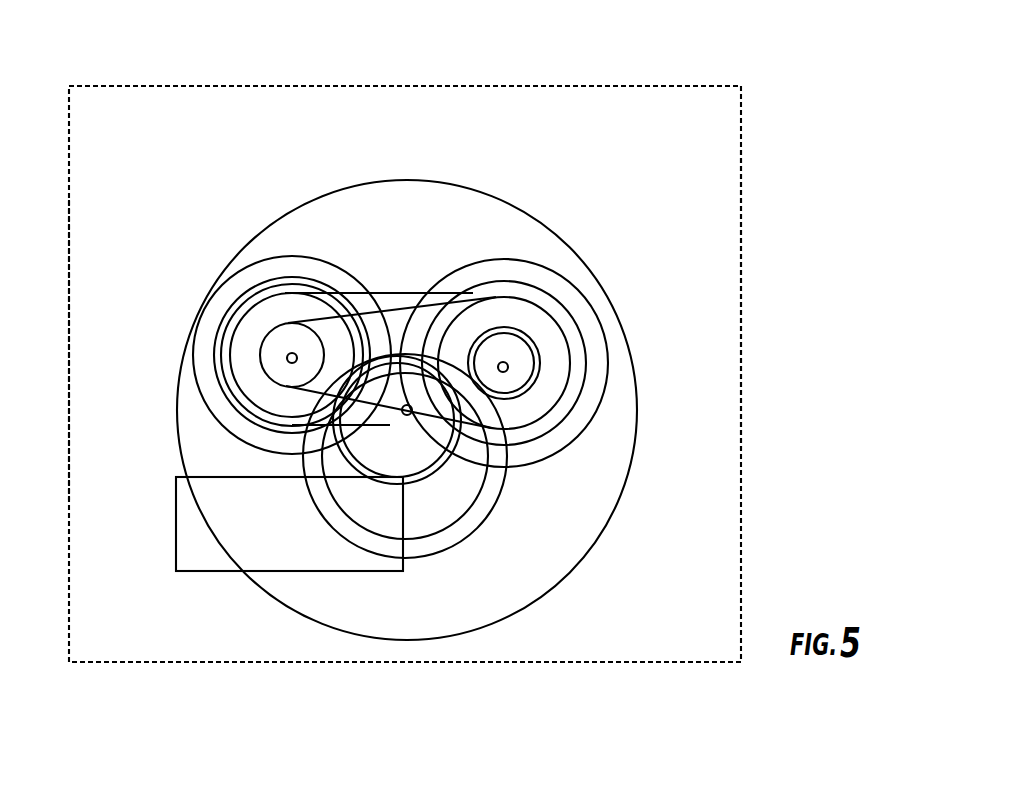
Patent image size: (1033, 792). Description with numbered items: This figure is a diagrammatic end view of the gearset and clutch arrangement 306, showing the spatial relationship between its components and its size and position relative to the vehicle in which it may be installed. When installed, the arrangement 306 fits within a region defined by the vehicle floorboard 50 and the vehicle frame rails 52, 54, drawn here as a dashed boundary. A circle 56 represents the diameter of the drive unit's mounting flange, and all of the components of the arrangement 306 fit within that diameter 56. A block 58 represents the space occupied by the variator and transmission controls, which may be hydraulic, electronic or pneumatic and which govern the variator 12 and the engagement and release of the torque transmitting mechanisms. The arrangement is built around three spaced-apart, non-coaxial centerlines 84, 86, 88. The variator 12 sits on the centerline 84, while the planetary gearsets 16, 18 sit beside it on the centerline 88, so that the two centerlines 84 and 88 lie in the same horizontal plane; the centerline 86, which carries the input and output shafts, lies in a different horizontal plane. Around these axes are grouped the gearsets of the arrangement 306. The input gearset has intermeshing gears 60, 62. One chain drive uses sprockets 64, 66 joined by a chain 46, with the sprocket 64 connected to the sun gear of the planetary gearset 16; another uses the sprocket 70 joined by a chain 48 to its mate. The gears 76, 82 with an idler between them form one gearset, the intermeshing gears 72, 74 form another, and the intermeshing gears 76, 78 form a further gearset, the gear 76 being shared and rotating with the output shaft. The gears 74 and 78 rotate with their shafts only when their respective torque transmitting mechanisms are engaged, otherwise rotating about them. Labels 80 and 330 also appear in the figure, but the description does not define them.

The vehicle floorboard 50 is at (442, 87).
The vehicle frame rail 52 is at (68, 345).
The vehicle frame rail 54 is at (742, 258).
The circle representing drive unit mounting flange diameter 56 is at (458, 183).
The block representing variator and transmission controls 58 is at (213, 571).
The gearset and clutch arrangement 306 is at (211, 234).
The variator 12 is at (307, 258).
The gear 78 is at (263, 430).
The sprocket 70 is at (247, 398).
The sprocket 66 is at (257, 354).
The centerline 84 is at (287, 362).
The planetary gearset 16 is at (510, 374).
The planetary gearset 18 is at (578, 441).
The sprocket 64 is at (555, 297).
The wheel pulley 80 is at (473, 320).
The gear 74 is at (542, 378).
The gear 62 is at (512, 404).
The gear 82 is at (525, 350).
The centerline 88 is at (499, 362).
The chain 48 is at (387, 293).
The chain 46 is at (317, 320).
The gear assembly 330 is at (490, 554).
The gear 72 is at (485, 520).
The gear 76 is at (437, 533).
The gear 60 is at (433, 472).
The centerline 86 is at (403, 415).